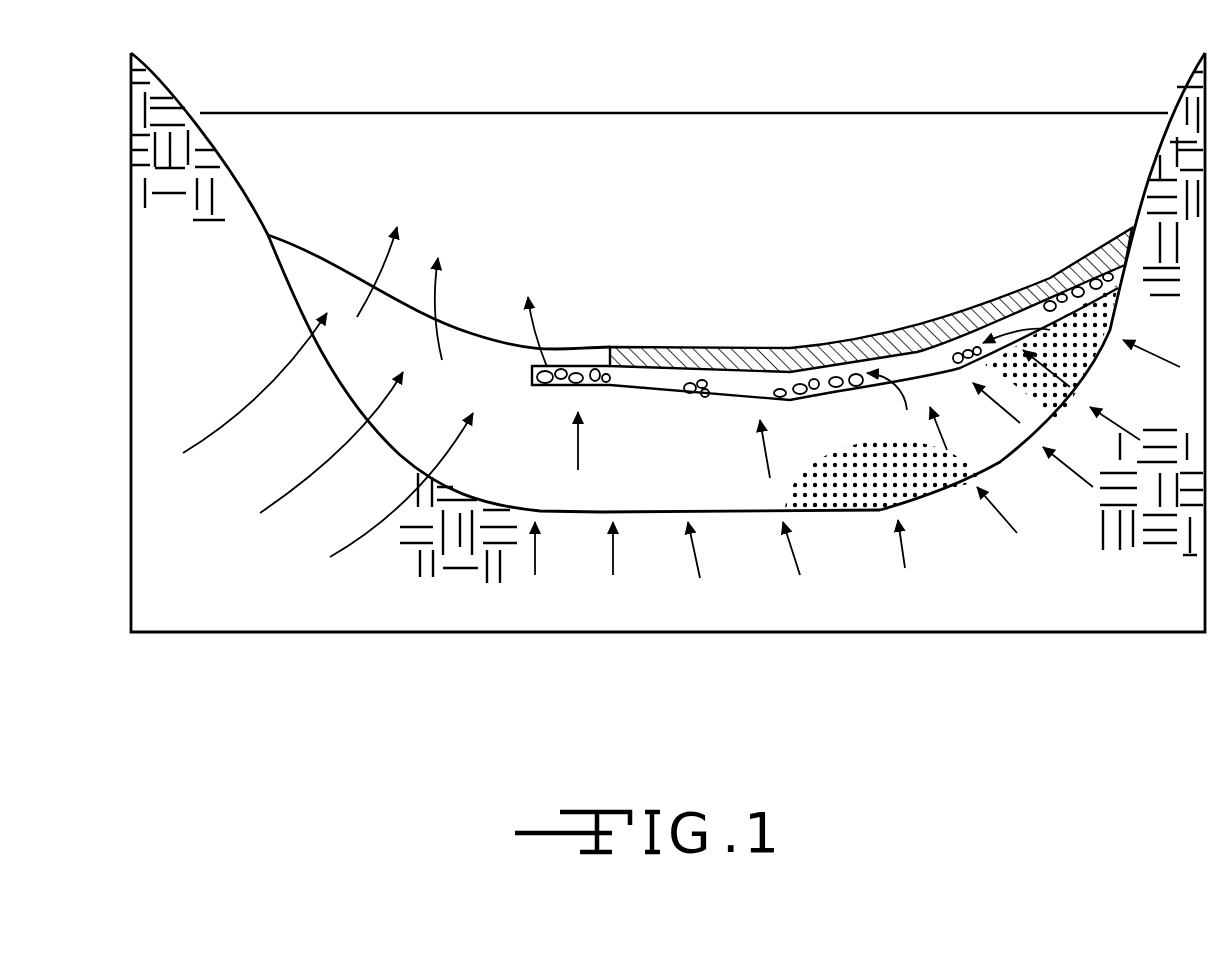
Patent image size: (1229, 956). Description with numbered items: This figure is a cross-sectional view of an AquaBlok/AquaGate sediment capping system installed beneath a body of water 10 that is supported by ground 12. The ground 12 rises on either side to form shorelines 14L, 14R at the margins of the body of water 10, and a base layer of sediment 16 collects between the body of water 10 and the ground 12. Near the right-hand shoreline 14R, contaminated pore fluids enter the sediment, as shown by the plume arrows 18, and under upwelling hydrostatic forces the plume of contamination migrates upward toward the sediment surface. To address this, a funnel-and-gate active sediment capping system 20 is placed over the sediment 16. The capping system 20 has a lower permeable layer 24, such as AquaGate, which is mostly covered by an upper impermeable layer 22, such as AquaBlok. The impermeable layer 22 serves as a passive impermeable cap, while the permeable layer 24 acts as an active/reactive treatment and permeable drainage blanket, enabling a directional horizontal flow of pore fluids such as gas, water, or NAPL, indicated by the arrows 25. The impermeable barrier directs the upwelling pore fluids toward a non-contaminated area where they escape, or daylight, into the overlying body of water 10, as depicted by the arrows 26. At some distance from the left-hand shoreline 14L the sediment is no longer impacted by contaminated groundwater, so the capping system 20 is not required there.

The body of water 10 is at (382, 160).
The ground 12 is at (200, 590).
The left shoreline 14L is at (190, 112).
The right shoreline 14R is at (1168, 112).
The base layer of sediment 16 is at (677, 460).
The plume arrows 18 is at (1003, 413).
The active sediment capping system 20 is at (826, 226).
The impermeable layer 22 is at (665, 365).
The permeable layer 24 is at (922, 367).
The horizontal flow arrows 25 is at (878, 362).
The daylighting arrows 26 is at (681, 401).